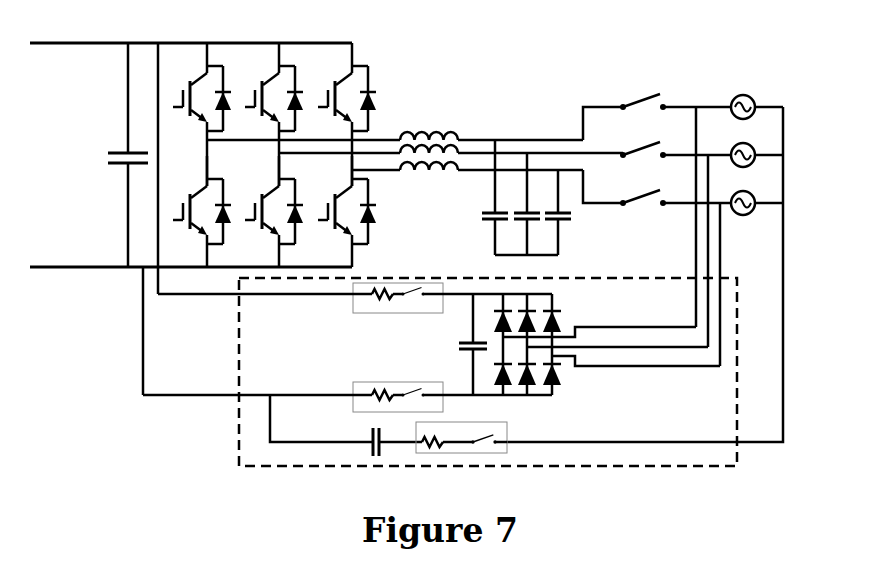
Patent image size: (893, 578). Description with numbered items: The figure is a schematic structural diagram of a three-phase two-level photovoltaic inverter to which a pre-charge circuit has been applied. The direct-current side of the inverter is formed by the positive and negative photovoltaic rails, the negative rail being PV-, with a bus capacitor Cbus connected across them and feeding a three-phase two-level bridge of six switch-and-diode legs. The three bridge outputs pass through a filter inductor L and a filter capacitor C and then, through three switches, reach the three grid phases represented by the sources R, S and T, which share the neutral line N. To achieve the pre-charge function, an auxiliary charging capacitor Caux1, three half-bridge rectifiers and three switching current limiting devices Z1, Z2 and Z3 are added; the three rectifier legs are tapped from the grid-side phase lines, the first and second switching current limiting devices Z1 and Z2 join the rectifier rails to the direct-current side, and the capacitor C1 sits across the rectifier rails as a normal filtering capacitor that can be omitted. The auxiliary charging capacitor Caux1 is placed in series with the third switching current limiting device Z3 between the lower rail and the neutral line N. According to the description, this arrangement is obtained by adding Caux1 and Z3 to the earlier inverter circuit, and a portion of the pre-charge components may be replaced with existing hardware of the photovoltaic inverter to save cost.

The negative PV bus PV- is at (191, 255).
The DC bus capacitor Cbus is at (116, 155).
The filter inductor L is at (429, 141).
The filter capacitor C is at (519, 197).
The grid phase R source R is at (743, 97).
The grid phase S source S is at (743, 145).
The grid phase T source T is at (743, 193).
The neutral line N is at (656, 274).
The switching current limiting device Z1 is at (355, 308).
The switching current limiting device Z2 is at (347, 386).
The switching current limiting device Z3 is at (474, 437).
The normal capacitor for filtering C1 is at (468, 344).
The auxiliary charging capacitor Caux1 is at (346, 425).